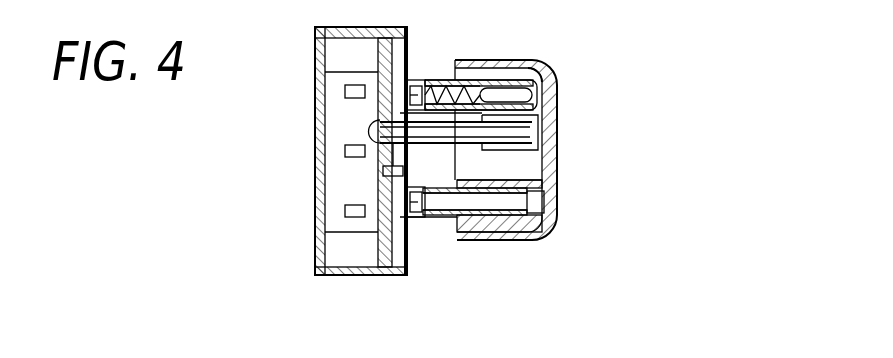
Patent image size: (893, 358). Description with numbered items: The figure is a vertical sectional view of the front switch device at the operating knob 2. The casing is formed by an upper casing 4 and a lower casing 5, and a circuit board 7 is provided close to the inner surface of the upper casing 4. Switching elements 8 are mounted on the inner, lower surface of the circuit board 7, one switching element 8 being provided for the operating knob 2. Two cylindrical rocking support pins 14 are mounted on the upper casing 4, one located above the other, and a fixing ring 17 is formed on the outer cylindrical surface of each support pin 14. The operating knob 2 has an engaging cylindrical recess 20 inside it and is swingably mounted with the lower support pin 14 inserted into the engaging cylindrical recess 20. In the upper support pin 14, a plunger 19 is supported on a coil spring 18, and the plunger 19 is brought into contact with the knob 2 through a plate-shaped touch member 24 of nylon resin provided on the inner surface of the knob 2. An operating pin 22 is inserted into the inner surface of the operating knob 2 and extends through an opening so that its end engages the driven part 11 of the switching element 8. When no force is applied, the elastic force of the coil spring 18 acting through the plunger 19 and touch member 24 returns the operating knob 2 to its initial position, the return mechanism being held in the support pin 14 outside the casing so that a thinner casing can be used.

The operating knob 2 is at (557, 165).
The upper casing 4 is at (360, 268).
The lower casing 5 is at (325, 233).
The circuit board 7 is at (380, 66).
The switching element 8 is at (337, 152).
The driven part 11 is at (372, 133).
The rocking support pin 14 is at (413, 80).
The fixing ring 17 is at (478, 80).
The coil spring 18 is at (443, 83).
The plunger 19 is at (513, 88).
The engaging cylindrical recess 20 is at (540, 203).
The operating pin 22 is at (523, 140).
The touch member 24 is at (550, 83).